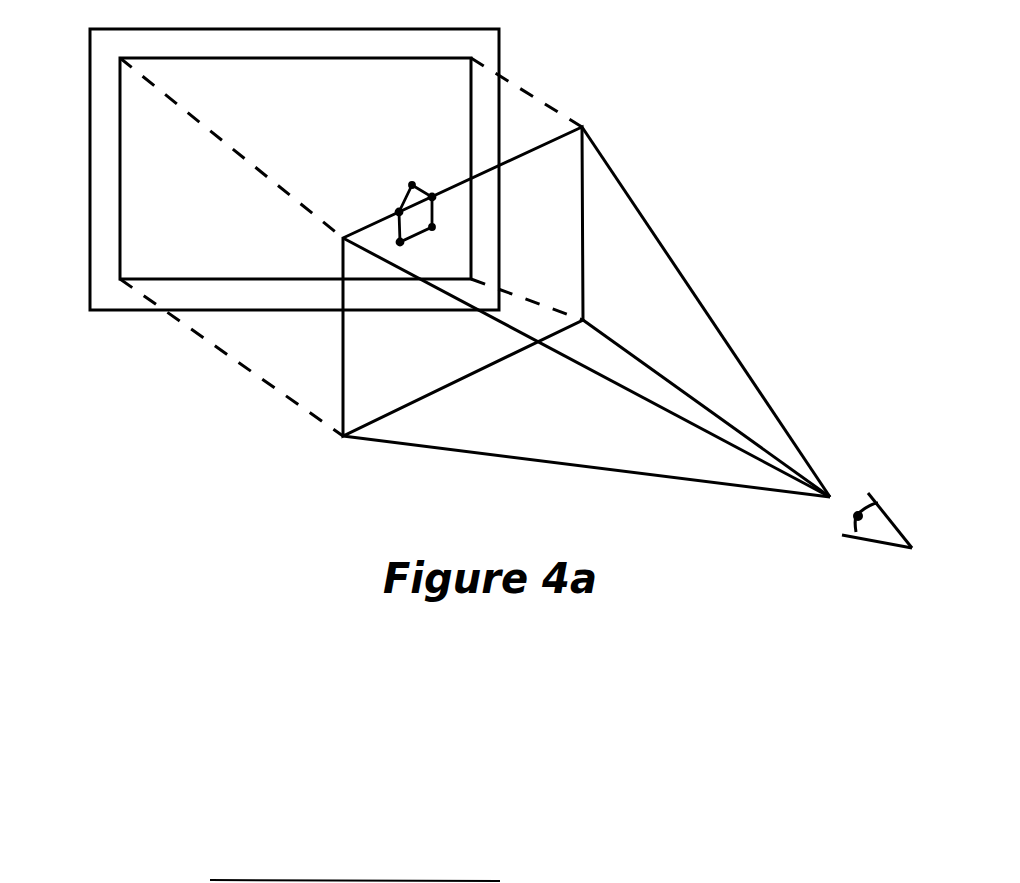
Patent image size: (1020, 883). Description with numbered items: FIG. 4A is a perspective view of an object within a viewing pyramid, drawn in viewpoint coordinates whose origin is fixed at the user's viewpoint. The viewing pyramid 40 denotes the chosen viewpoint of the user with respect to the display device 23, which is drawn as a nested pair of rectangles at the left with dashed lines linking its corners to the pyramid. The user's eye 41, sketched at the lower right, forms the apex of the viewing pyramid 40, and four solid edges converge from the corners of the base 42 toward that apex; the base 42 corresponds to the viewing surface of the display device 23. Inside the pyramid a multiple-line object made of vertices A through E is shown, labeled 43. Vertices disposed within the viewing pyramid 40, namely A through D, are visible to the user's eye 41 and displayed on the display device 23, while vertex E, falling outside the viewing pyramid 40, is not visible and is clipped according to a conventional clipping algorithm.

The display device 23 is at (90, 122).
The viewing pyramid 40 is at (700, 300).
The user's eye 41 is at (875, 550).
The base 42 is at (584, 303).
The object polygon 43 is at (393, 208).